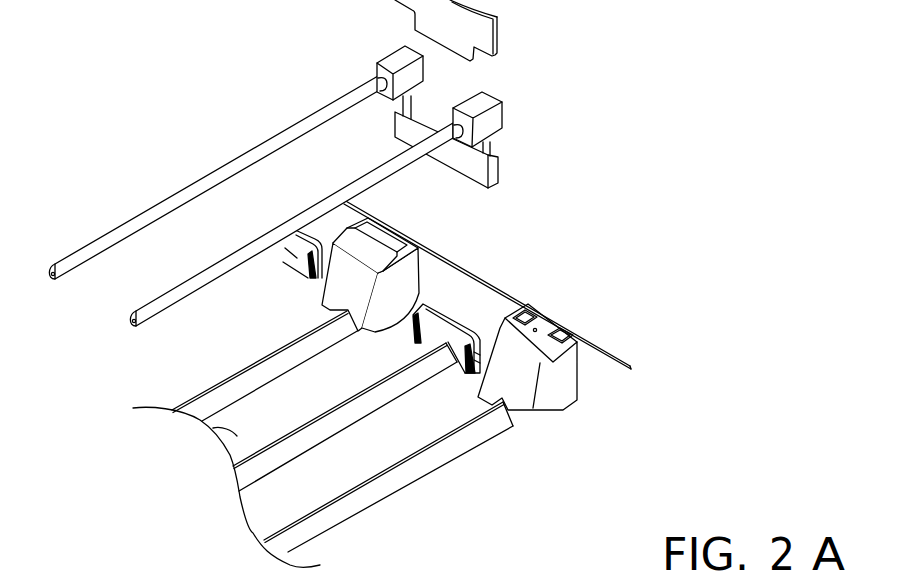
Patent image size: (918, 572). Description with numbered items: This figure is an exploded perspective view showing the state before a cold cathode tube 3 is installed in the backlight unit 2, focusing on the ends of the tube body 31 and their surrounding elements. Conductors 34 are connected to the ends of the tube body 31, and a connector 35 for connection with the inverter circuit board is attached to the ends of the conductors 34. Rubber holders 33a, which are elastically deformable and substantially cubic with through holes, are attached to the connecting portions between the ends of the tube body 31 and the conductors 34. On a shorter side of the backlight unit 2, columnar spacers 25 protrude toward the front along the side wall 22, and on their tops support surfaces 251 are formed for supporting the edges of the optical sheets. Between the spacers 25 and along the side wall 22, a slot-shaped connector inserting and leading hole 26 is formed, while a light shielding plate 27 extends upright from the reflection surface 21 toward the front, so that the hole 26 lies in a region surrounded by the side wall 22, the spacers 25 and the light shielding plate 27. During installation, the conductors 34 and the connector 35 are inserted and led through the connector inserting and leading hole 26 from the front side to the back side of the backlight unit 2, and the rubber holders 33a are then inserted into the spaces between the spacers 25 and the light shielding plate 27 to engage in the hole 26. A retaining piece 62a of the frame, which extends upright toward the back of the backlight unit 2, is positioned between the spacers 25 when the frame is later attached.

The backlight unit 2 is at (387, 379).
The cold cathode tube 3 is at (327, 163).
The reflection surface 21 is at (213, 430).
The side wall 22 is at (603, 343).
The spacer 25 is at (547, 352).
The support surface 251 is at (527, 350).
The connector inserting and leading hole 26 is at (410, 303).
The light shielding plate 27 is at (455, 317).
The tube body 31 is at (213, 172).
The rubber holder 33a is at (489, 97).
The conductor 34 is at (503, 142).
The connector 35 is at (503, 172).
The retaining piece 62a is at (504, 32).